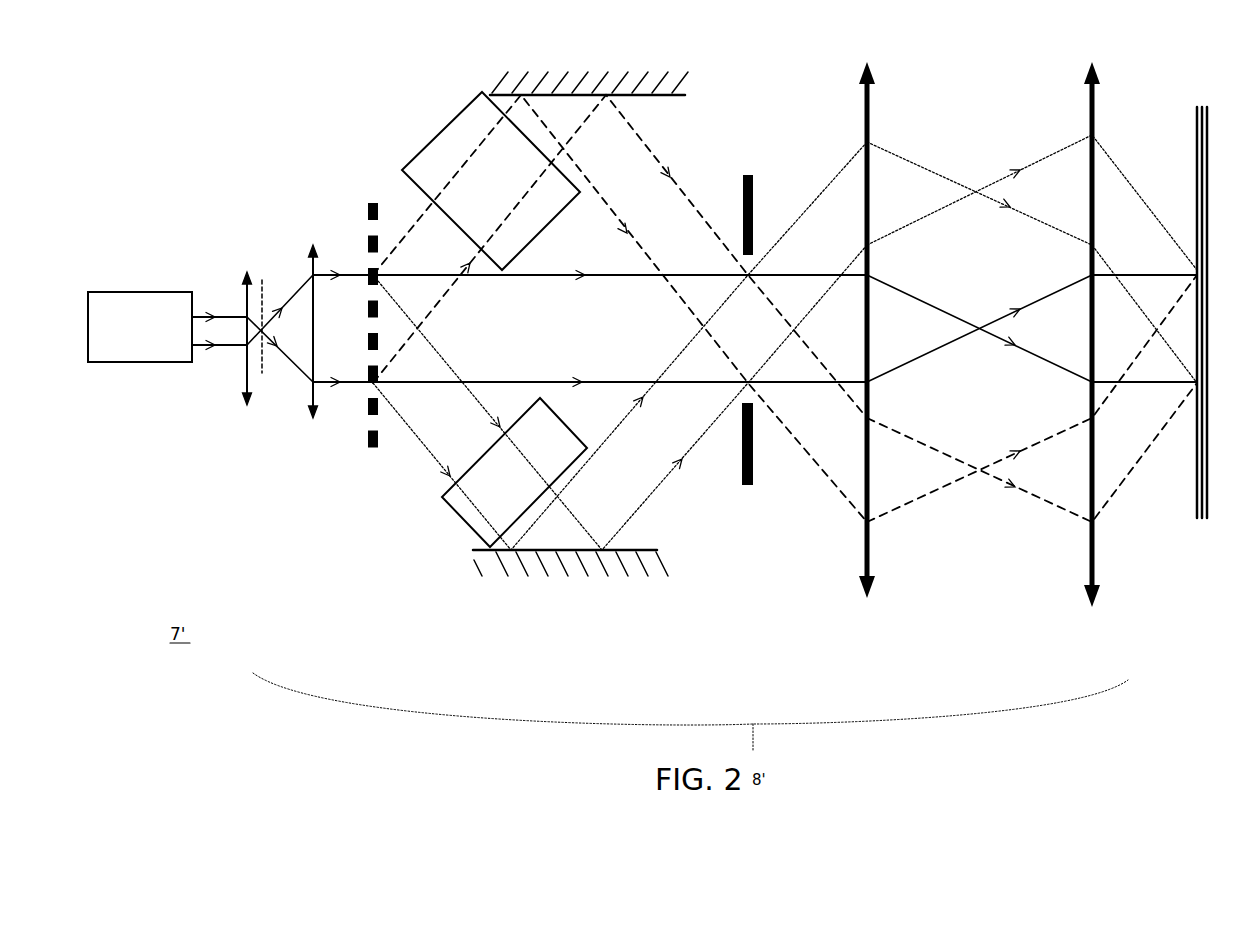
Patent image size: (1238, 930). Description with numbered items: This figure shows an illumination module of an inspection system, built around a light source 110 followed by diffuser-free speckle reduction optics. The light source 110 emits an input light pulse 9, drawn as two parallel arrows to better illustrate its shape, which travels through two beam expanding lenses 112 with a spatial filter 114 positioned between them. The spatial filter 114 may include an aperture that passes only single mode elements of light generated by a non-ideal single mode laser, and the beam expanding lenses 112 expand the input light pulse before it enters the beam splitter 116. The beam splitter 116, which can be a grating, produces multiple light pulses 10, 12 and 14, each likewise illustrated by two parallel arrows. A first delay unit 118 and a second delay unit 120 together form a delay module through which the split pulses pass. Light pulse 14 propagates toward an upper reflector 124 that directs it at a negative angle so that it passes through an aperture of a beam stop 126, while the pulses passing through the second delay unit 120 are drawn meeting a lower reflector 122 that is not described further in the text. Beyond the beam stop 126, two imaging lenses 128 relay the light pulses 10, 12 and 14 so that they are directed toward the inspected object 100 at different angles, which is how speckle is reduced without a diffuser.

The light source 110 is at (130, 362).
The light pulse 9 is at (208, 346).
The beam expanding lenses 112 is at (247, 427).
The spatial filter 114 is at (262, 262).
The beam splitter 116 is at (376, 198).
The light pulse 10 is at (503, 278).
The light pulse 12 is at (440, 452).
The light pulse 14 is at (417, 223).
The first delay unit 118 is at (457, 112).
The upper reflector 124 is at (542, 72).
The second delay unit 120 is at (475, 540).
The lower mirror 122 is at (543, 573).
The beam stop 126 is at (750, 173).
The imaging lenses 128 is at (865, 603).
The inspected object 100 is at (1200, 103).